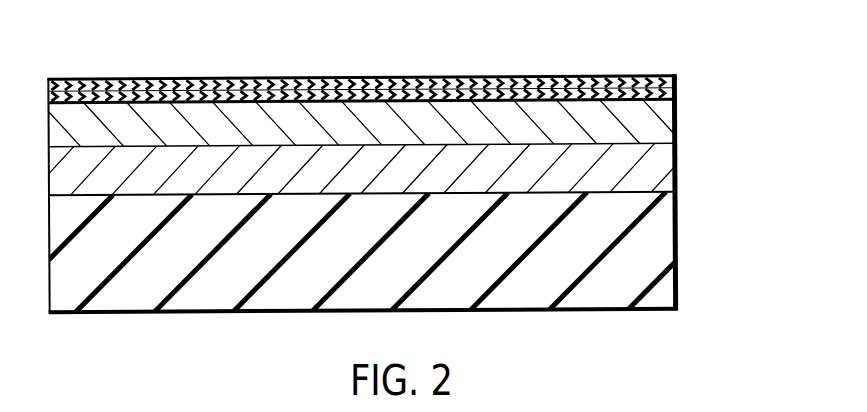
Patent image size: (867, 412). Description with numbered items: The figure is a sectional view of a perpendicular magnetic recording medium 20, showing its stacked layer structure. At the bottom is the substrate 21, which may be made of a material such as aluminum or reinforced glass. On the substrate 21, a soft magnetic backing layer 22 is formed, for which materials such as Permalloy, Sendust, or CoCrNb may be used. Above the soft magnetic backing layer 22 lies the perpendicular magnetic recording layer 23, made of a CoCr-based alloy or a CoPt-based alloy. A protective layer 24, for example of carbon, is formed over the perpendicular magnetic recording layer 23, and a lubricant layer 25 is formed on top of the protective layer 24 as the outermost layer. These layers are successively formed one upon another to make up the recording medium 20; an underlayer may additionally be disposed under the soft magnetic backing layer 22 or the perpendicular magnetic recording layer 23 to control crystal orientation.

The perpendicular magnetic recording medium 20 is at (737, 27).
The substrate 21 is at (662, 241).
The soft magnetic backing layer 22 is at (663, 166).
The perpendicular magnetic recording layer 23 is at (667, 122).
The protective layer 24 is at (677, 92).
The lubricant layer 25 is at (677, 75).